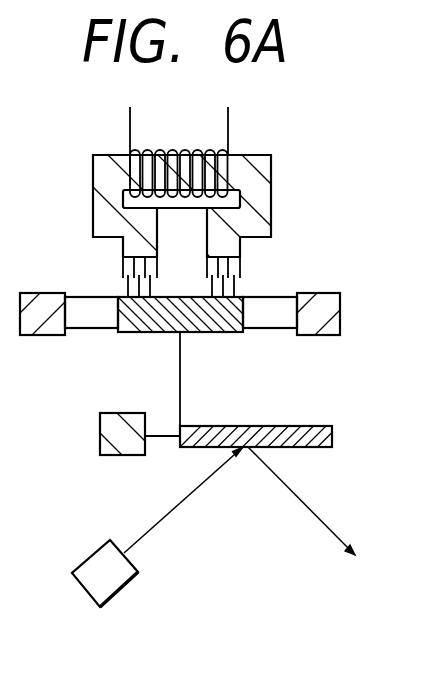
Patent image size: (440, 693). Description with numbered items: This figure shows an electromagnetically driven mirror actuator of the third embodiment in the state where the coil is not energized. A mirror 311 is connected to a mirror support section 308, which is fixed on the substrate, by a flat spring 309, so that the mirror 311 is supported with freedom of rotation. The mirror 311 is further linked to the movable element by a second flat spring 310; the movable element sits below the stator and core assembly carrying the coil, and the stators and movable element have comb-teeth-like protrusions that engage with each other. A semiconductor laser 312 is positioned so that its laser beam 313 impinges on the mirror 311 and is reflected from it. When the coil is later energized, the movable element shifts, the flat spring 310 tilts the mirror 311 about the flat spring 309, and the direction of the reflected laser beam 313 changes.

The mirror support section 308 is at (108, 438).
The flat spring 309 is at (159, 434).
The flat spring 310 is at (181, 378).
The mirror 311 is at (333, 438).
The semiconductor laser 312 is at (90, 585).
The laser beam 313 is at (170, 516).